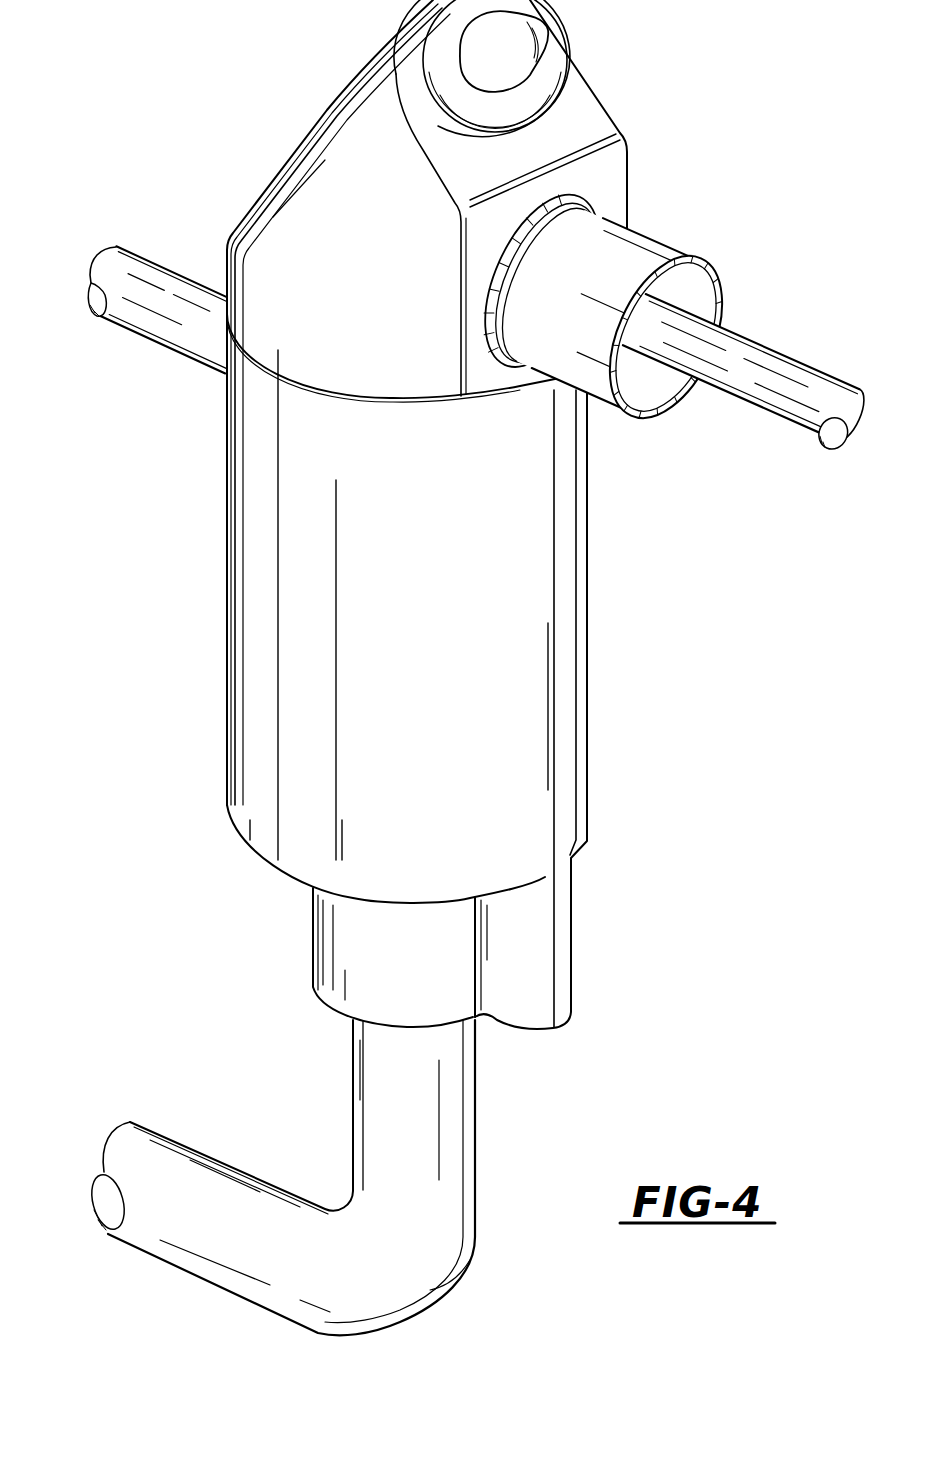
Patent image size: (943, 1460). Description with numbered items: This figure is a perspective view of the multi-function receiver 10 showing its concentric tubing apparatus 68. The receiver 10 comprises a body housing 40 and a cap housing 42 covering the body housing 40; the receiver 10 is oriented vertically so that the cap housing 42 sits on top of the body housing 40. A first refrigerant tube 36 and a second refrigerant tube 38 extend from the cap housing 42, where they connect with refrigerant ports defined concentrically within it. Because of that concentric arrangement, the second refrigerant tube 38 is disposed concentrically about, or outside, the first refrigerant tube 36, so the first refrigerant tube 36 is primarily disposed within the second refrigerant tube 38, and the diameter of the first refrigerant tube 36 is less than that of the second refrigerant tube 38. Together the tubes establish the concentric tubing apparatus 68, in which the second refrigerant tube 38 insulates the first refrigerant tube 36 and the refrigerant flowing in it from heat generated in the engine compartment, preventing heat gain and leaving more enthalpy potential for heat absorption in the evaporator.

The multi-function receiver 10 is at (465, 667).
The first refrigerant tube 36 is at (800, 357).
The second refrigerant tube 38 is at (665, 236).
The body housing 40 is at (590, 717).
The cap housing 42 is at (278, 148).
The concentric tubing apparatus 68 is at (660, 423).